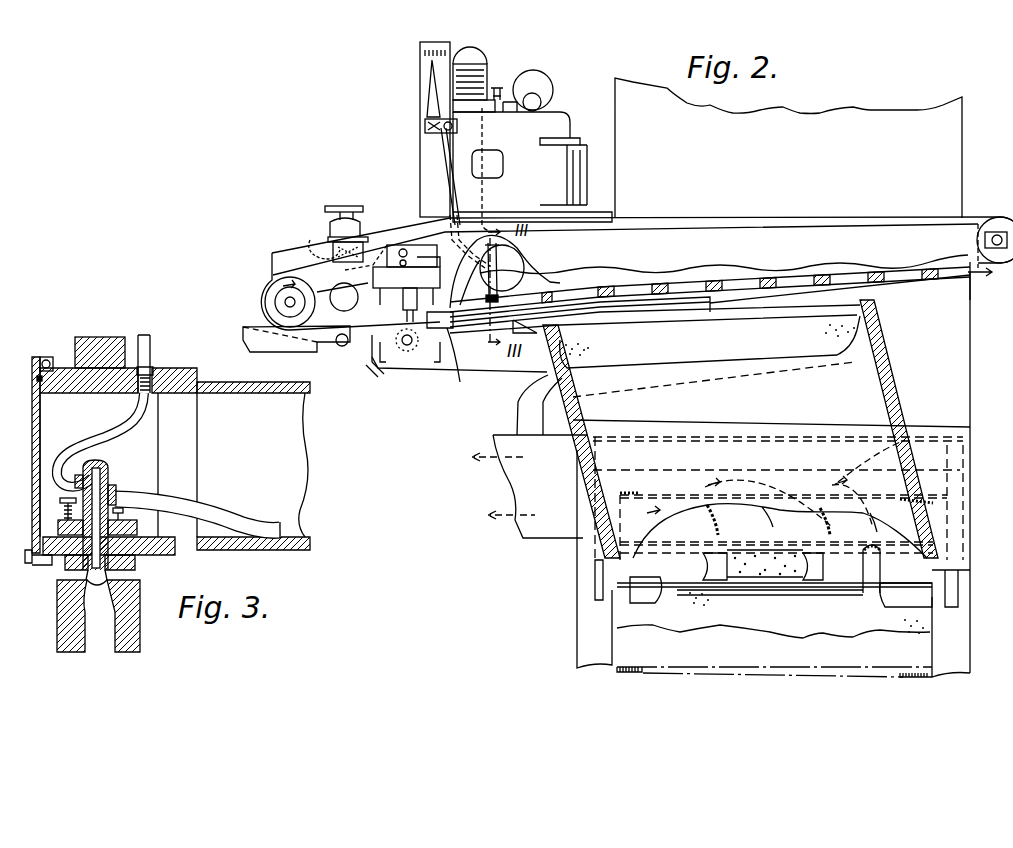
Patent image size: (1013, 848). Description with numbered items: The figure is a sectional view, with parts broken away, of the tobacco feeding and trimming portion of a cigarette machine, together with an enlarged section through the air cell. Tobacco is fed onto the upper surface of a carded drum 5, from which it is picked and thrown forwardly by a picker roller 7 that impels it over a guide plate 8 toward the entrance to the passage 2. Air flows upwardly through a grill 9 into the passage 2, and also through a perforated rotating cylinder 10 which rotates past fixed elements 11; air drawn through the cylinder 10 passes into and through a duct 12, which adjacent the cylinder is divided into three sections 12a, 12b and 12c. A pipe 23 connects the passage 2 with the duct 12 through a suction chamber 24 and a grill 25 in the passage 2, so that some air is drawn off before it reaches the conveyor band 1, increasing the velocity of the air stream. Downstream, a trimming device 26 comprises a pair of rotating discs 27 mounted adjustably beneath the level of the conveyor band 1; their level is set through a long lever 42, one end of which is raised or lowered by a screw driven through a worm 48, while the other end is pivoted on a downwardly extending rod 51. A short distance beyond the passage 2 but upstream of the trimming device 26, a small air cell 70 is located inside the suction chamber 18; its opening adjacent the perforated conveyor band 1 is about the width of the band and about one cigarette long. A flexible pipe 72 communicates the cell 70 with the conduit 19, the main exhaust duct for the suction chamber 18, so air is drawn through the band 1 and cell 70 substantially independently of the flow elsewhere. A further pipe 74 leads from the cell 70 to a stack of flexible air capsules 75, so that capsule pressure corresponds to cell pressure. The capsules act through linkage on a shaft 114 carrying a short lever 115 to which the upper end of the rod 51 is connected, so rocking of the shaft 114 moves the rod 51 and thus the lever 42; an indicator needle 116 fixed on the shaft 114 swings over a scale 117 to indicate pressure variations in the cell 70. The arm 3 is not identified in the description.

In FIG. 2, the conveyor band 1 is at (912, 202).
In FIG. 3, the conveyor band 1 is at (135, 602).
In FIG. 2, the passage 2 is at (771, 468).
In FIG. 3, the passage 2 is at (86, 645).
In FIG. 2, the pivoted arm 3 is at (342, 352).
In FIG. 2, the carded drum 5 is at (918, 657).
In FIG. 2, the picker roller 7 is at (770, 563).
In FIG. 2, the guide plate 8 is at (787, 580).
In FIG. 2, the grill 9 is at (697, 610).
In FIG. 2, the perforated rotating cylinder 10 is at (887, 563).
In FIG. 2, the fixed elements 11 is at (718, 580).
In FIG. 2, the duct 12 is at (558, 513).
In FIG. 2, the duct section 12a is at (885, 532).
In FIG. 2, the duct section 12b is at (787, 525).
In FIG. 2, the duct section 12c is at (697, 535).
In FIG. 2, the suction chamber 18 is at (742, 272).
In FIG. 3, the suction chamber 18 is at (145, 437).
In FIG. 2, the conduit 19 is at (506, 262).
In FIG. 3, the conduit 19 is at (262, 476).
In FIG. 2, the pipe 23 is at (525, 402).
In FIG. 2, the suction chamber 24 is at (711, 378).
In FIG. 2, the grill 25 is at (655, 341).
In FIG. 2, the trimming device 26 is at (432, 357).
In FIG. 2, the rotating discs 27 is at (478, 345).
In FIG. 2, the long lever 42 is at (387, 245).
In FIG. 2, the worm 48 is at (322, 240).
In FIG. 2, the rod 51 is at (445, 172).
In FIG. 2, the air cell 70 is at (507, 287).
In FIG. 3, the air cell 70 is at (100, 492).
In FIG. 3, the flexible pipe 72 is at (215, 516).
In FIG. 2, the pipe 74 is at (462, 215).
In FIG. 3, the pipe 74 is at (152, 346).
In FIG. 2, the flexible air capsules 75 is at (490, 72).
In FIG. 2, the shaft 114 is at (425, 126).
In FIG. 2, the short lever 115 is at (462, 116).
In FIG. 2, the indicator needle 116 is at (432, 80).
In FIG. 2, the scale 117 is at (440, 43).